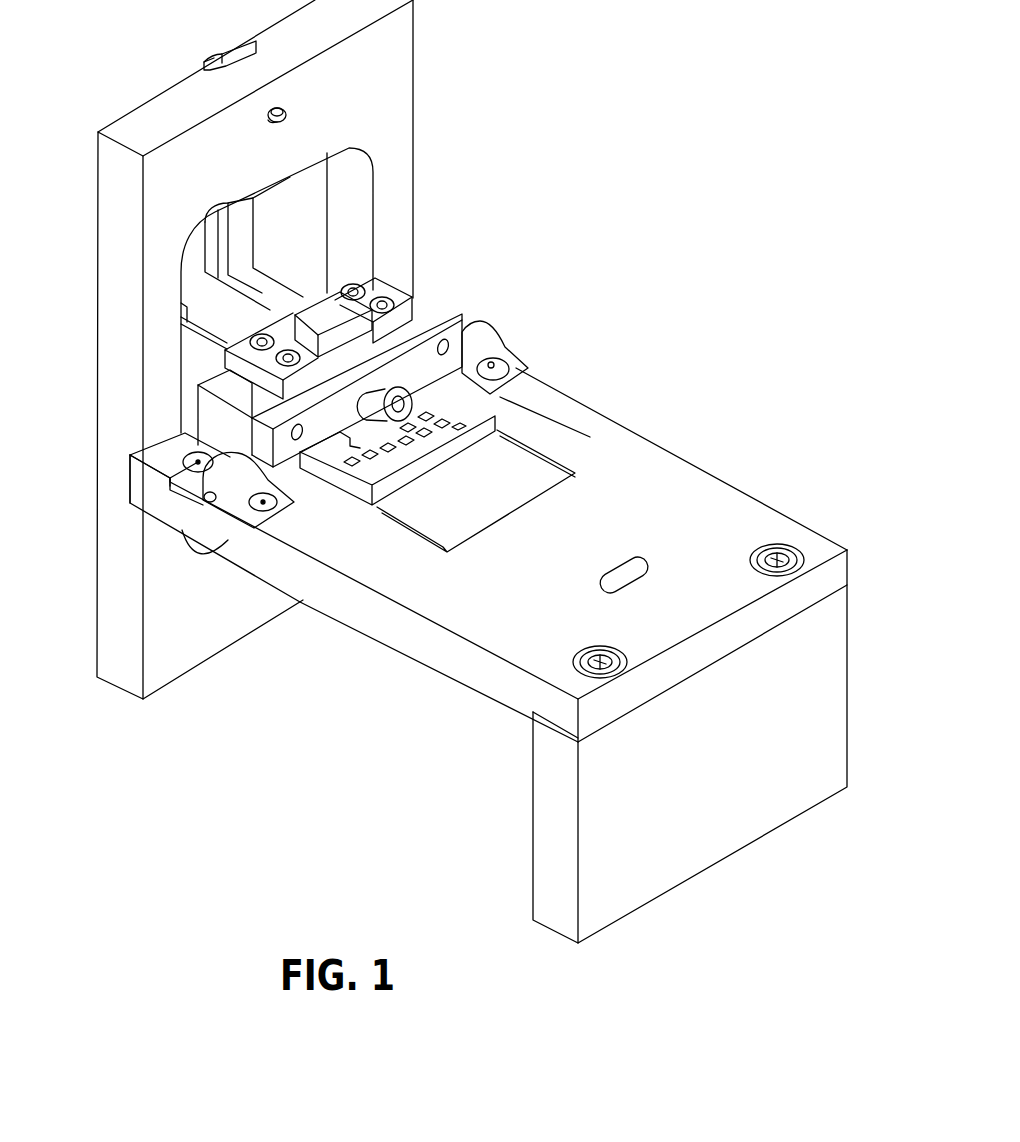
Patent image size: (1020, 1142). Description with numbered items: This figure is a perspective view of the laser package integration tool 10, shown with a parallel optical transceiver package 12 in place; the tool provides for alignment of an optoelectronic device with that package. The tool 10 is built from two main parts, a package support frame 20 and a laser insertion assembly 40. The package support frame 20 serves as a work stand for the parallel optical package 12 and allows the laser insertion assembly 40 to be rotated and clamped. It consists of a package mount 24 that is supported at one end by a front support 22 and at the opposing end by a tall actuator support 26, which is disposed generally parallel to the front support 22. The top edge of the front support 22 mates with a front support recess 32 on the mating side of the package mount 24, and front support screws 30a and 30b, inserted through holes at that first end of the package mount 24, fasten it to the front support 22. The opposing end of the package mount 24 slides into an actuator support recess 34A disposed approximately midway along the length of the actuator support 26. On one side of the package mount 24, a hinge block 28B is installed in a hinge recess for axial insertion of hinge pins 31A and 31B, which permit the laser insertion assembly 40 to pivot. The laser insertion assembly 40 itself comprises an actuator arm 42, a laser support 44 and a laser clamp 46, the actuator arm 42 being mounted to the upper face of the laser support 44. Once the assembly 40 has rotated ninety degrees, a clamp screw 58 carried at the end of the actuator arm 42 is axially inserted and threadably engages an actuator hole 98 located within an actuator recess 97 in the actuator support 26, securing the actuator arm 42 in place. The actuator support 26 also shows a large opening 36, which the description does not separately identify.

The laser package integration tool 10 is at (768, 889).
The parallel optical transceiver package 12 is at (500, 408).
The package support frame 20 is at (861, 570).
The front support 22 is at (765, 791).
The package mount 24 is at (712, 500).
The actuator support 26 is at (386, 92).
The hinge block 28B is at (230, 513).
The front support screw 30a is at (781, 552).
The front support screw 30b is at (584, 650).
The hinge pin 31A is at (505, 345).
The hinge pin 31B is at (205, 500).
The front support recess 32 is at (553, 725).
The actuator support recess 34A is at (130, 508).
The opening 36 is at (290, 230).
The laser insertion assembly 40 is at (445, 284).
The actuator arm 42 is at (313, 303).
The laser support 44 is at (232, 395).
The laser clamp 46 is at (443, 323).
The clamp screw 58 is at (285, 117).
The actuator recess 97 is at (253, 47).
The actuator hole 98 is at (272, 112).